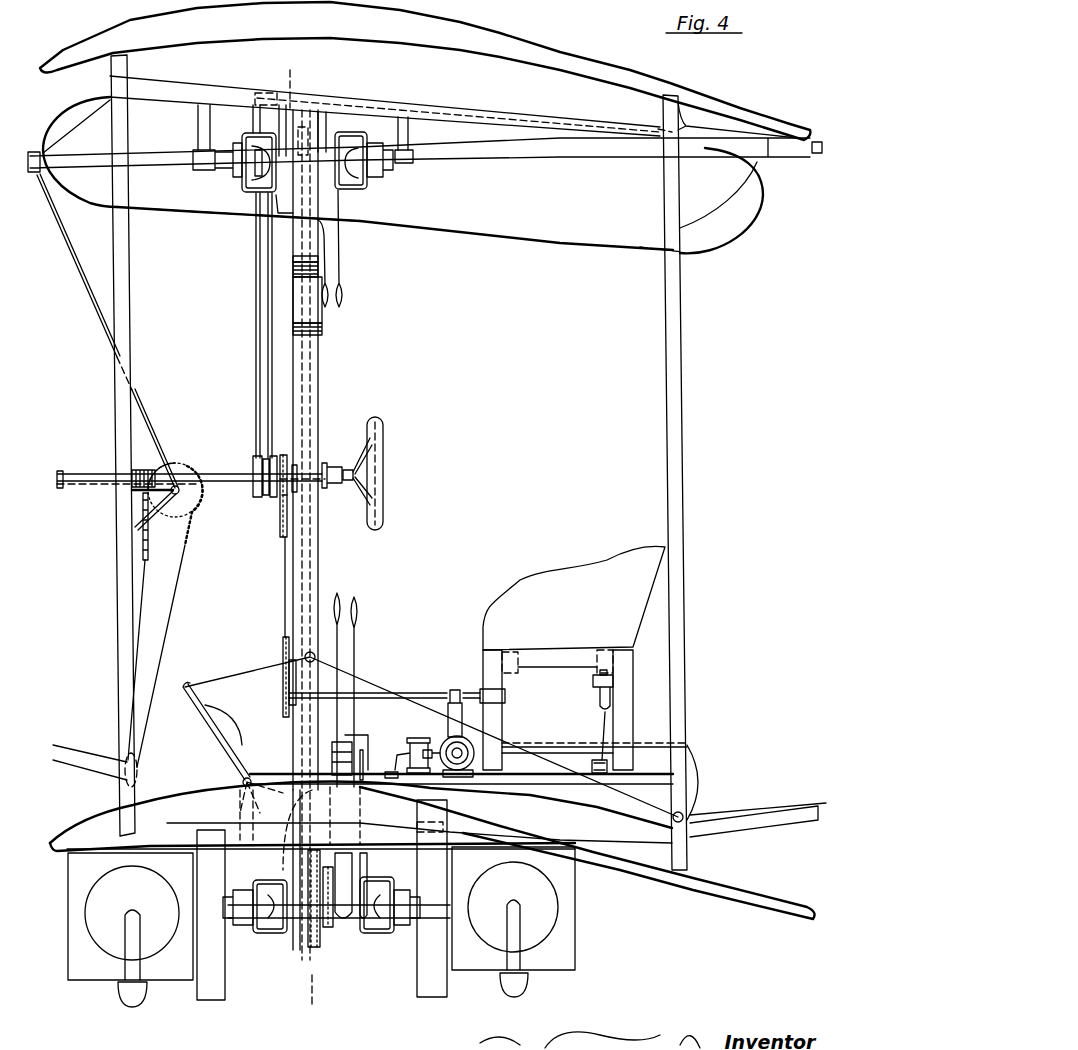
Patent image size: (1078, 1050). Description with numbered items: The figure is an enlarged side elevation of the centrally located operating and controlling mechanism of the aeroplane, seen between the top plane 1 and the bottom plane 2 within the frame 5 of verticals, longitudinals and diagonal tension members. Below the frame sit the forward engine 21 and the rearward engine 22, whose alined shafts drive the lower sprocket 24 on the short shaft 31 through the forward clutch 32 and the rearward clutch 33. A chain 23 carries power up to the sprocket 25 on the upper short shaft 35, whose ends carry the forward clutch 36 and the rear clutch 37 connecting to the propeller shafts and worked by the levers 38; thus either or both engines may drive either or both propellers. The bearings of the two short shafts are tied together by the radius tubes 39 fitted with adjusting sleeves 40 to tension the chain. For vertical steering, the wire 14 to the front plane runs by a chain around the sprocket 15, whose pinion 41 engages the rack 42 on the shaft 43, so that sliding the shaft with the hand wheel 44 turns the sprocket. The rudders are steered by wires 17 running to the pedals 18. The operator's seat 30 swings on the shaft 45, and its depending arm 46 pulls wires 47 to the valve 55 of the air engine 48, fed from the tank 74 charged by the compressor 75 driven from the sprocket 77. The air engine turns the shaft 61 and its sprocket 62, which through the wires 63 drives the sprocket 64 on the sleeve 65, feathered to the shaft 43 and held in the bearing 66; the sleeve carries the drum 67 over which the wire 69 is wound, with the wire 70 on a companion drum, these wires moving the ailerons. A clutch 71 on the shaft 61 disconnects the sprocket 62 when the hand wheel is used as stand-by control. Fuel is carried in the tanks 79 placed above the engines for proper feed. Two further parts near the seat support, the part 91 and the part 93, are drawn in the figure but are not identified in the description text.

The top plane 1 is at (598, 66).
The bottom plane 2 is at (706, 880).
The frame 5 is at (496, 541).
The wire 14 is at (110, 765).
The sprocket 15 is at (190, 504).
The wires 17 is at (745, 812).
The pedals 18 is at (243, 764).
The forward engine 21 is at (130, 930).
The rearward engine 22 is at (513, 922).
The chain 23 is at (326, 935).
The sprocket 24 is at (306, 935).
The sprocket 25 is at (376, 109).
The operator's seat 30 is at (574, 598).
The short shaft 31 is at (272, 975).
The forward clutch 32 is at (255, 917).
The rearward clutch 33 is at (390, 913).
The short shaft 35 is at (258, 178).
The forward clutch 36 is at (234, 165).
The rear clutch 37 is at (403, 165).
The levers 38 is at (346, 249).
The radius tubes 39 is at (320, 410).
The adjusting sleeves 40 is at (294, 320).
The pinion 41 is at (197, 470).
The rack 42 is at (150, 470).
The shaft 43 is at (218, 474).
The hand wheel 44 is at (386, 473).
The shaft 45 is at (548, 692).
The depending arm 46 is at (588, 717).
The wires 47 is at (461, 769).
The air engine 48 is at (451, 733).
The valve 55 is at (412, 745).
The shaft 61 is at (397, 687).
The sprocket 62 is at (283, 705).
The wires 63 is at (258, 456).
The sprocket 64 is at (285, 455).
The sleeve 65 is at (338, 465).
The bearing 66 is at (329, 490).
The drum 67 is at (270, 500).
The wire 69 is at (242, 325).
The wire 70 is at (368, 866).
The clutch 71 is at (282, 690).
The tank 74 is at (555, 756).
The compressor 75 is at (365, 743).
The sprocket 77 is at (381, 945).
The tanks 79 is at (176, 204).
The bracket 91 is at (612, 676).
The bolt 93 is at (634, 708).